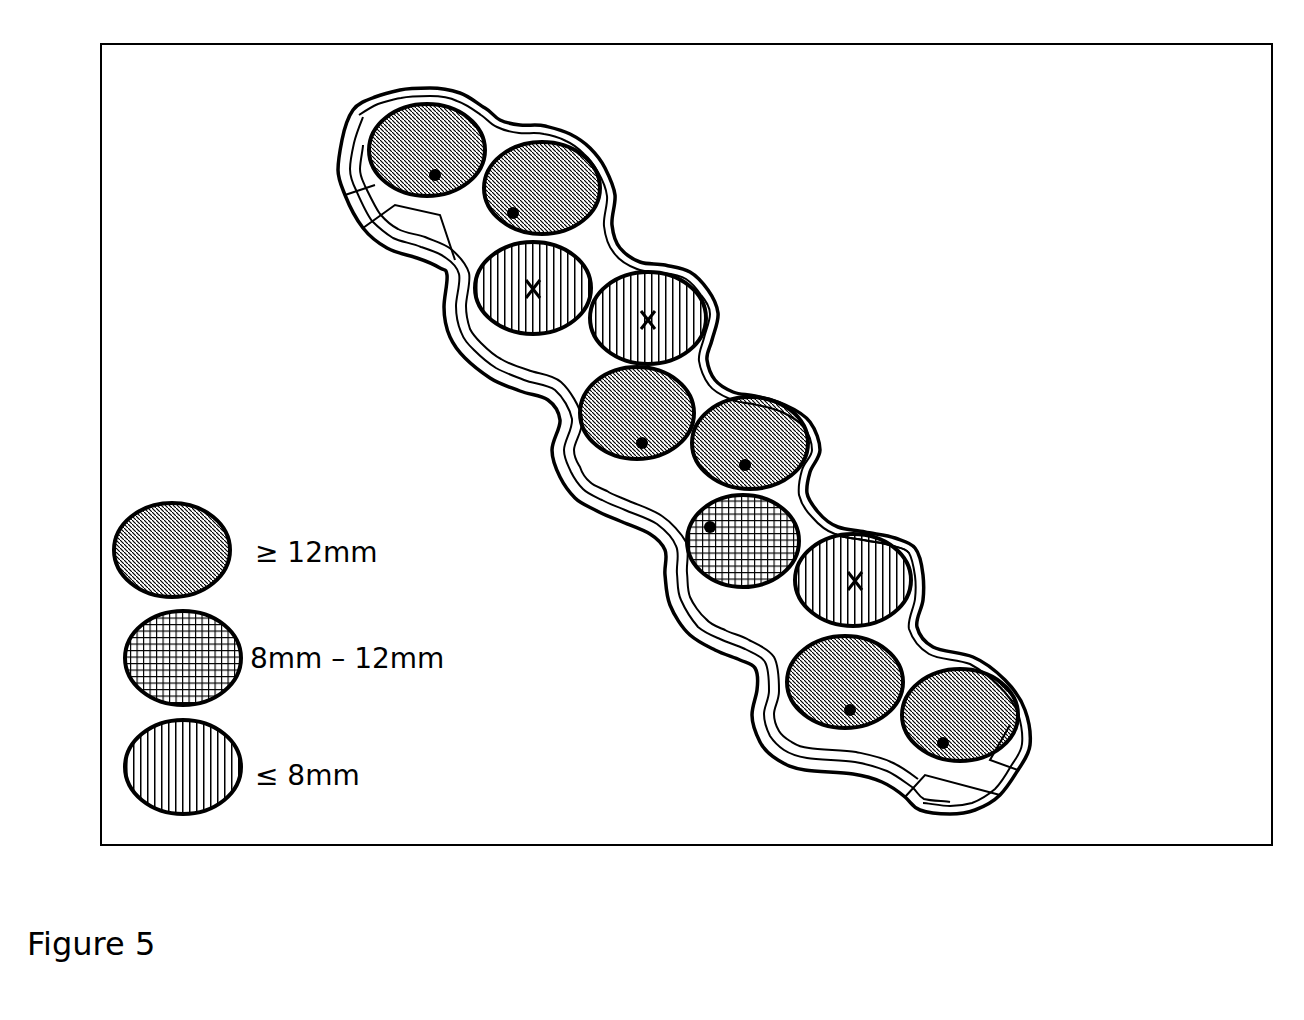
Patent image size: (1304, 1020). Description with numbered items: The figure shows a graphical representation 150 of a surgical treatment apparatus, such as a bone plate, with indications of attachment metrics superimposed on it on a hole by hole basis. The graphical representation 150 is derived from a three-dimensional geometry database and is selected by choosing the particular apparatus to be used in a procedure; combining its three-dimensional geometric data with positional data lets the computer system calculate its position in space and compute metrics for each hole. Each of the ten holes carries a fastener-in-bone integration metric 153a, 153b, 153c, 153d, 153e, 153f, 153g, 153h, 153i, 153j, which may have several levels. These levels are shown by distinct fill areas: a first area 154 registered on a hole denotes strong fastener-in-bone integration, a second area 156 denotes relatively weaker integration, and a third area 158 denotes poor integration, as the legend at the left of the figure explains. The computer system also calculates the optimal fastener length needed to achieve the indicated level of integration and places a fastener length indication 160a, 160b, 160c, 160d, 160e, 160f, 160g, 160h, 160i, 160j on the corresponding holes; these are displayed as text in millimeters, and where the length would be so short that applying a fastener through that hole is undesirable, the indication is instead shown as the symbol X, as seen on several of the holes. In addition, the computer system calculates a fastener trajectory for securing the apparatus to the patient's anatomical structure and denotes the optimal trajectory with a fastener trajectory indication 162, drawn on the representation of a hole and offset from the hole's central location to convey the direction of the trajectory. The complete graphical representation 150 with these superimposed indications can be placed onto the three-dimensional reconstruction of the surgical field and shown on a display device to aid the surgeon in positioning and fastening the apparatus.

The graphical representation 150 is at (700, 272).
The fastener-in-bone integration metric 153a is at (443, 113).
The fastener-in-bone integration metric 153b is at (587, 177).
The fastener-in-bone integration metric 153c is at (510, 317).
The fastener-in-bone integration metric 153d is at (612, 438).
The fastener-in-bone integration metric 153e is at (648, 268).
The fastener-in-bone integration metric 153f is at (777, 410).
The fastener-in-bone integration metric 153g is at (707, 547).
The fastener-in-bone integration metric 153h is at (862, 532).
The fastener-in-bone integration metric 153i is at (813, 683).
The fastener-in-bone integration metric 153j is at (997, 693).
The first area 154 is at (467, 143).
The second area 156 is at (690, 577).
The third area 158 is at (887, 553).
The fastener length indication 160a is at (397, 133).
The fastener length indication 160b is at (540, 180).
The fastener length indication 160c is at (523, 283).
The fastener length indication 160d is at (618, 411).
The fastener length indication 160e is at (657, 317).
The fastener length indication 160f is at (737, 430).
The fastener length indication 160g is at (735, 580).
The fastener length indication 160h is at (860, 580).
The fastener length indication 160i is at (843, 690).
The fastener length indication 160j is at (957, 707).
The fastener trajectory indication 162 is at (650, 440).